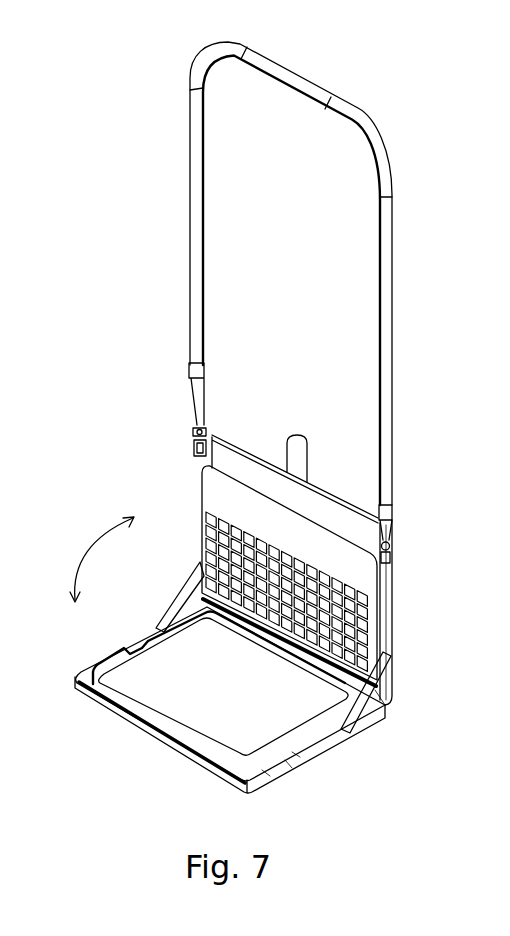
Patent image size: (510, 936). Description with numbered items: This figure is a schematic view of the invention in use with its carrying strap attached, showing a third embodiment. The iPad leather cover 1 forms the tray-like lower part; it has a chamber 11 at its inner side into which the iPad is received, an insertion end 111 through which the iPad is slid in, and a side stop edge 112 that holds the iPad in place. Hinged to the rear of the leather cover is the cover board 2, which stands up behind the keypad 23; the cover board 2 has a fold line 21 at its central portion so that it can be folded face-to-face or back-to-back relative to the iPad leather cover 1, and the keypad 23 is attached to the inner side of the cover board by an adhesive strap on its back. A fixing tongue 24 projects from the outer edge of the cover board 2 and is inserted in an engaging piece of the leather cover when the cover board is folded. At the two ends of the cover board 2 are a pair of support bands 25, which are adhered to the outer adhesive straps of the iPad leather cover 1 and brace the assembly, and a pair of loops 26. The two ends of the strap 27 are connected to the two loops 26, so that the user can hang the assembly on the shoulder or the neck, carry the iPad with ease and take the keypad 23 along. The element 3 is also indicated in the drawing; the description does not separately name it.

The iPad leather cover 1 is at (216, 717).
The chamber 11 is at (220, 708).
The insertion end 111 is at (267, 770).
The side stop edge 112 is at (293, 753).
The cover board 2 is at (340, 570).
The fold line 21 is at (385, 602).
The keypad 23 is at (212, 497).
The fixing tongue 24 is at (295, 452).
The support bands 25 is at (188, 585).
The loops 26 is at (197, 452).
The strap 27 is at (293, 82).
The hinge 3 is at (385, 703).